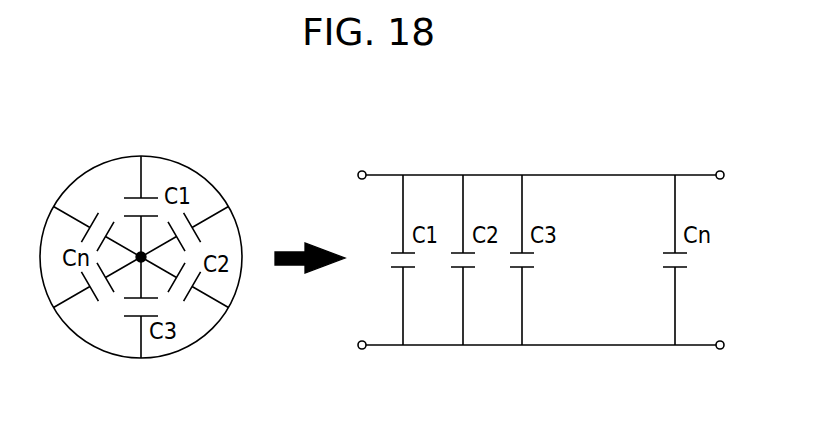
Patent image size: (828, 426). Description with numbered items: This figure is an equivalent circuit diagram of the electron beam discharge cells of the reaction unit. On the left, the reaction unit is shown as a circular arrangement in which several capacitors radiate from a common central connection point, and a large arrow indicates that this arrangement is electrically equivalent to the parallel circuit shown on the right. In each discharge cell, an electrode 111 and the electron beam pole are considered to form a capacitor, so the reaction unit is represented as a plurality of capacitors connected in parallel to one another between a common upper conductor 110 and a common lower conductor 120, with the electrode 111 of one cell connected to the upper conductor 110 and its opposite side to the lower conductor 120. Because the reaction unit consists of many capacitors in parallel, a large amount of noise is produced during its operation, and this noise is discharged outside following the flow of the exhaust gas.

The common electrode / housing 110 is at (210, 178).
The electrode 111 is at (143, 172).
The lower lead electrode 120 is at (160, 244).